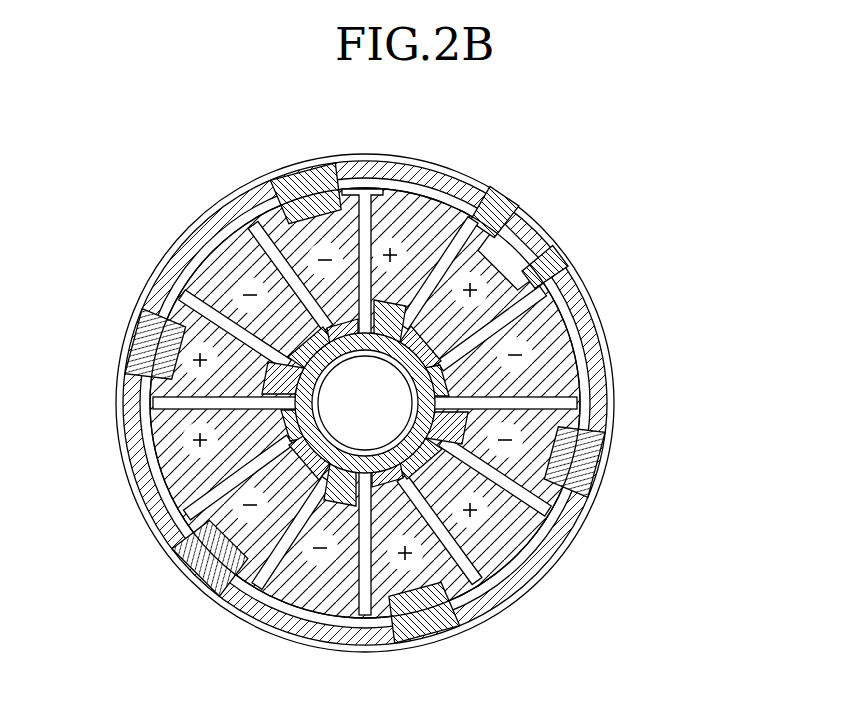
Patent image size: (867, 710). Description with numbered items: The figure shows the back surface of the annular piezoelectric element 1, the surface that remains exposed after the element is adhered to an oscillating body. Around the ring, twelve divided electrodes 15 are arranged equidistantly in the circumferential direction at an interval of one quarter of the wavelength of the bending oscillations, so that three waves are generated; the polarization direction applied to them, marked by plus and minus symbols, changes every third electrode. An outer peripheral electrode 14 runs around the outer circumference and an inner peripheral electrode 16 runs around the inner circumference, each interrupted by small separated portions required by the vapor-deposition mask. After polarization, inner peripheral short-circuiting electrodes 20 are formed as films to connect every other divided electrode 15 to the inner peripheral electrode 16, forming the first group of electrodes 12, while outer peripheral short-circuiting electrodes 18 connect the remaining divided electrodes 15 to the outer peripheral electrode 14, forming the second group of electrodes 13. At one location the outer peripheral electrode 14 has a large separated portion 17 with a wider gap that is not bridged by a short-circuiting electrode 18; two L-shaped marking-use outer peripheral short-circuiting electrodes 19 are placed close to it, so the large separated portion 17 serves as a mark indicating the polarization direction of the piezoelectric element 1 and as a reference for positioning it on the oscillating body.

The piezoelectric element 1 is at (580, 150).
The first group of electrodes 12 is at (345, 214).
The second group of electrodes 13 is at (402, 215).
The outer peripheral electrode 14 is at (433, 182).
The divided electrodes 15 is at (297, 247).
The inner peripheral electrode 16 is at (408, 352).
The large separated portion 17 is at (527, 233).
The outer peripheral short-circuiting electrodes 18 is at (300, 186).
The marking-use outer peripheral short-circuiting electrodes 19 is at (490, 200).
The inner peripheral short-circuiting electrodes 20 is at (400, 317).